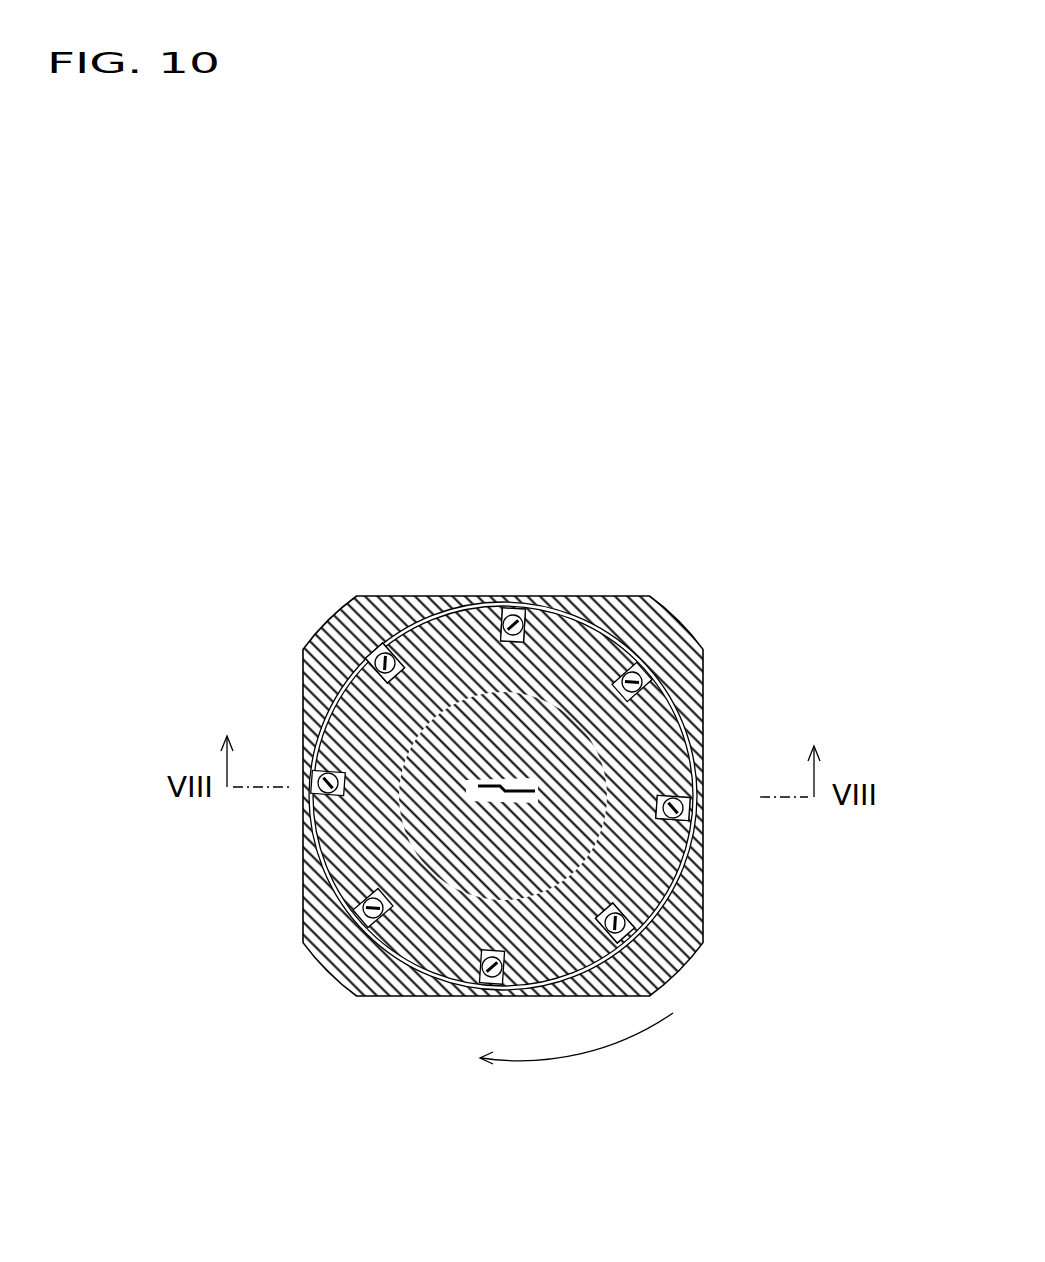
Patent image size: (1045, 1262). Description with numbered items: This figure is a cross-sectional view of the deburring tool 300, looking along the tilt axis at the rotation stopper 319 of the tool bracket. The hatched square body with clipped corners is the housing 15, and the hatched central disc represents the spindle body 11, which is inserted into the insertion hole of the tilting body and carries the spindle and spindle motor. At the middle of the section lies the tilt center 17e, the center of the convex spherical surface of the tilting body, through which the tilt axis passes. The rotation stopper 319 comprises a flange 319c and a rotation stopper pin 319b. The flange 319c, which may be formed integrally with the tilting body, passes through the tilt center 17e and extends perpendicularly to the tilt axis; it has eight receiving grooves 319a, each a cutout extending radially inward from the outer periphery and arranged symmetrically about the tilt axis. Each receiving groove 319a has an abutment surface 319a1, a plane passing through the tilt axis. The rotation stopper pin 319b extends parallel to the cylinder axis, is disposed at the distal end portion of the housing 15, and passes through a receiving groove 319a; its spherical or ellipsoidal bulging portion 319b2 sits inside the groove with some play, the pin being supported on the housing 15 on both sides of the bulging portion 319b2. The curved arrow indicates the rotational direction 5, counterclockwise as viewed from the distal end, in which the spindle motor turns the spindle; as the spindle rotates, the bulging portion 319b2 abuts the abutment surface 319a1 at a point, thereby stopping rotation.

The deburring tool 300 is at (893, 392).
The rotation stopper 319 is at (662, 594).
The receiving groove 319a is at (380, 655).
The abutment surface 319a1 is at (522, 642).
The rotation stopper pin 319b is at (517, 609).
The bulging portion 319b2 is at (714, 793).
The flange 319c is at (647, 688).
The housing 15 is at (303, 713).
The spindle body 11 is at (700, 878).
The tilt center 17e is at (500, 793).
The rotational direction 5 is at (565, 1060).